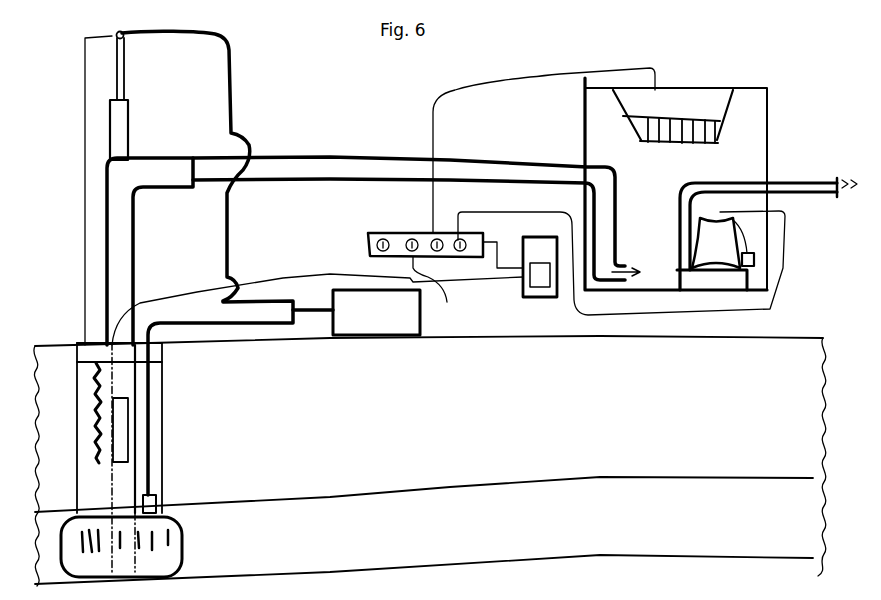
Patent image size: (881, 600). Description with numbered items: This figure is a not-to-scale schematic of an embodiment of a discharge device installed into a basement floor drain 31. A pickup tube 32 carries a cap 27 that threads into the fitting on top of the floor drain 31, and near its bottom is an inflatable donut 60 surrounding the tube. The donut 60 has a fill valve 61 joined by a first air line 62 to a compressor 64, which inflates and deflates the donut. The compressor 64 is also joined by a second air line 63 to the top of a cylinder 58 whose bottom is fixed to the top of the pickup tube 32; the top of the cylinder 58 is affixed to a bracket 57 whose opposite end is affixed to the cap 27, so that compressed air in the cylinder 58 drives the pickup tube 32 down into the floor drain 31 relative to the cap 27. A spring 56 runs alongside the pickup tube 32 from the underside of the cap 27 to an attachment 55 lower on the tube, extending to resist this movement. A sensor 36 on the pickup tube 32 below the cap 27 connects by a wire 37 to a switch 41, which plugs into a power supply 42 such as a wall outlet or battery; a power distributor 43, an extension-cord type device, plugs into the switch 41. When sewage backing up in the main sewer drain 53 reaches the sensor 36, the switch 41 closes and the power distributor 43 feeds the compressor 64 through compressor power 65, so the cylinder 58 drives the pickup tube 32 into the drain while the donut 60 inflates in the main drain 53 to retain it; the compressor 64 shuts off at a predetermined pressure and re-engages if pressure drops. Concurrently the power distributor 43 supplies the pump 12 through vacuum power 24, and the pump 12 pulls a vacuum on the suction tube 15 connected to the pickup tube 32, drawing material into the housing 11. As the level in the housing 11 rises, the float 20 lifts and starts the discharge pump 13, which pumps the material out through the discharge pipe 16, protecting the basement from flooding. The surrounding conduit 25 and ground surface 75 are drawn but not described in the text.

The housing 11 is at (768, 130).
The pump 12 is at (712, 83).
The discharge pump 13 is at (727, 221).
The suction tube 15 is at (333, 158).
The discharge pipe 16 is at (808, 180).
The float 20 is at (753, 260).
The vacuum power 24 is at (528, 75).
The conduit 25 is at (777, 303).
The cap 27 is at (163, 352).
The floor drain 31 is at (162, 437).
The pickup tube 32 is at (135, 262).
The sensor 36 is at (127, 427).
The wire 37 is at (283, 278).
The switch 41 is at (542, 288).
The power supply 42 is at (549, 258).
The power distributor 43 is at (400, 233).
The compressor power 65 is at (443, 287).
The main sewer drain 53 is at (366, 542).
The attachment 55 is at (130, 465).
The spring 56 is at (95, 397).
The bracket 57 is at (85, 237).
The cylinder 58 is at (130, 118).
The inflatable donut 60 is at (182, 540).
The fill valve 61 is at (157, 498).
The first air line 62 is at (263, 326).
The second air line 63 is at (233, 90).
The compressor 64 is at (392, 322).
The ground surface 75 is at (726, 338).